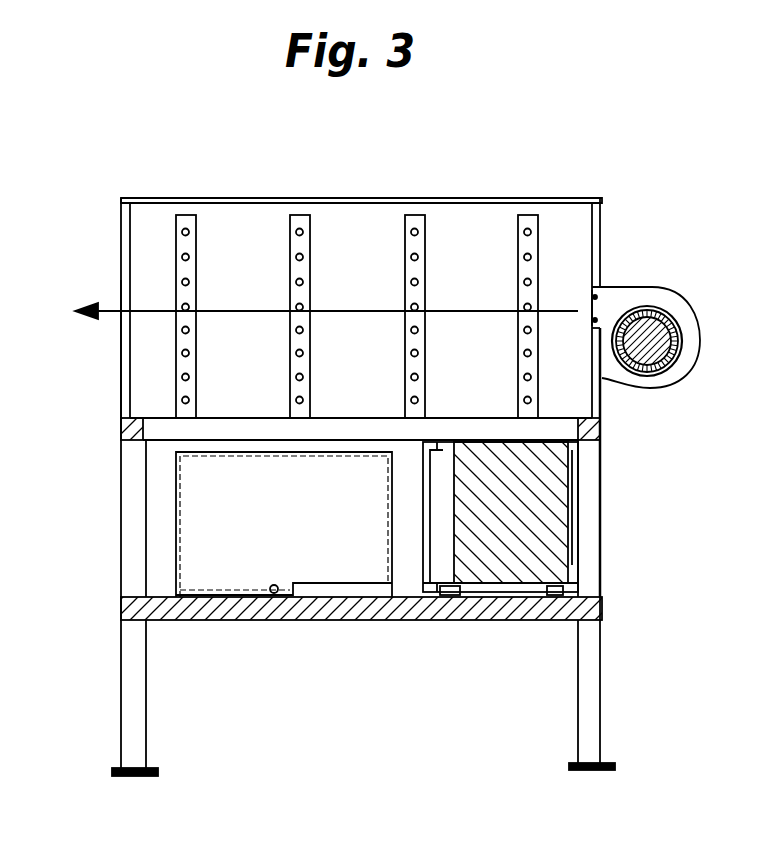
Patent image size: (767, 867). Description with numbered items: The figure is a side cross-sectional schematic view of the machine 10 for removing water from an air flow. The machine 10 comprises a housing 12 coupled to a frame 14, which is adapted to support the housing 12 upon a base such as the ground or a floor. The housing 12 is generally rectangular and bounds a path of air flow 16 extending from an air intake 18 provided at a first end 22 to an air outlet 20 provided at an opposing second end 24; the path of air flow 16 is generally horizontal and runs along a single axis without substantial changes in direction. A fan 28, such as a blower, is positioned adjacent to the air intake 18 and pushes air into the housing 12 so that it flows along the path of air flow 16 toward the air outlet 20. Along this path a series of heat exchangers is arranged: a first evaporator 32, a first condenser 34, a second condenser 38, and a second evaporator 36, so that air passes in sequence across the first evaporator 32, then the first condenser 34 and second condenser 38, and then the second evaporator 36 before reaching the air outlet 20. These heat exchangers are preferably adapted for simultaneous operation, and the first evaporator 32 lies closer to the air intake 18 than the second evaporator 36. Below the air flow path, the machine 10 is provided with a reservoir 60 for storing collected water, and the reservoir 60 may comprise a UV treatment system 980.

The machine 10 is at (630, 143).
The housing 12 is at (121, 198).
The frame 14 is at (603, 565).
The path of air flow 16 is at (155, 310).
The air intake 18 is at (584, 297).
The air outlet 20 is at (113, 345).
The first end 22 is at (603, 393).
The second end 24 is at (124, 394).
The fan 28 is at (688, 288).
The first evaporator 32 is at (528, 212).
The first condenser 34 is at (427, 212).
The second evaporator 36 is at (190, 213).
The second condenser 38 is at (302, 215).
The reservoir 60 is at (226, 597).
The UV treatment system 980 is at (358, 597).